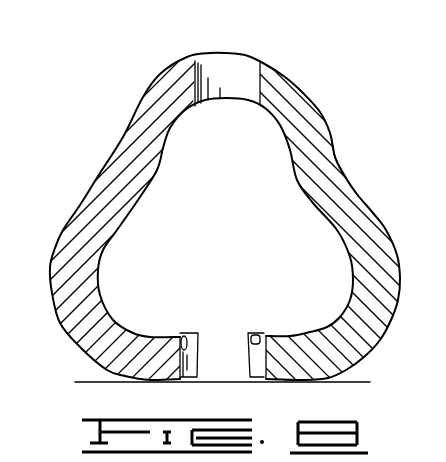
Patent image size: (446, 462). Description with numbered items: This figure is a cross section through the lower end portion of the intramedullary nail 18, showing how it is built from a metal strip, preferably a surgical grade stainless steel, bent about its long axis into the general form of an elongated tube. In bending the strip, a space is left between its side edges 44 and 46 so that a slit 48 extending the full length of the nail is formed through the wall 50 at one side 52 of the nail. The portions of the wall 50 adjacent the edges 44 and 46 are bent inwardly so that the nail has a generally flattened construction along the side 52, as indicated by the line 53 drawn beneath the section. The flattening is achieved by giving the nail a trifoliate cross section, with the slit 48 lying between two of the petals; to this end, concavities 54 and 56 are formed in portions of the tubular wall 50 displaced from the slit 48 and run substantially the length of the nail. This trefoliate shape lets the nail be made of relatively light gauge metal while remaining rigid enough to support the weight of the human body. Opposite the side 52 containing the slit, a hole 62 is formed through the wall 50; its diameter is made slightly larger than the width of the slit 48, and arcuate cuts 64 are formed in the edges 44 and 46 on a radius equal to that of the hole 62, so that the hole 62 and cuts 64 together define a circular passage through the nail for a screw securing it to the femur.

The intramedullary nail 18 is at (313, 78).
The side edge 44 is at (199, 334).
The side edge 46 is at (248, 346).
The slit 48 is at (213, 348).
The wall 50 is at (329, 164).
The side 52 is at (291, 379).
The line 53 is at (356, 378).
The concavity 54 is at (119, 152).
The concavity 56 is at (342, 173).
The hole 62 is at (259, 68).
The arcuate cut 64 is at (182, 334).